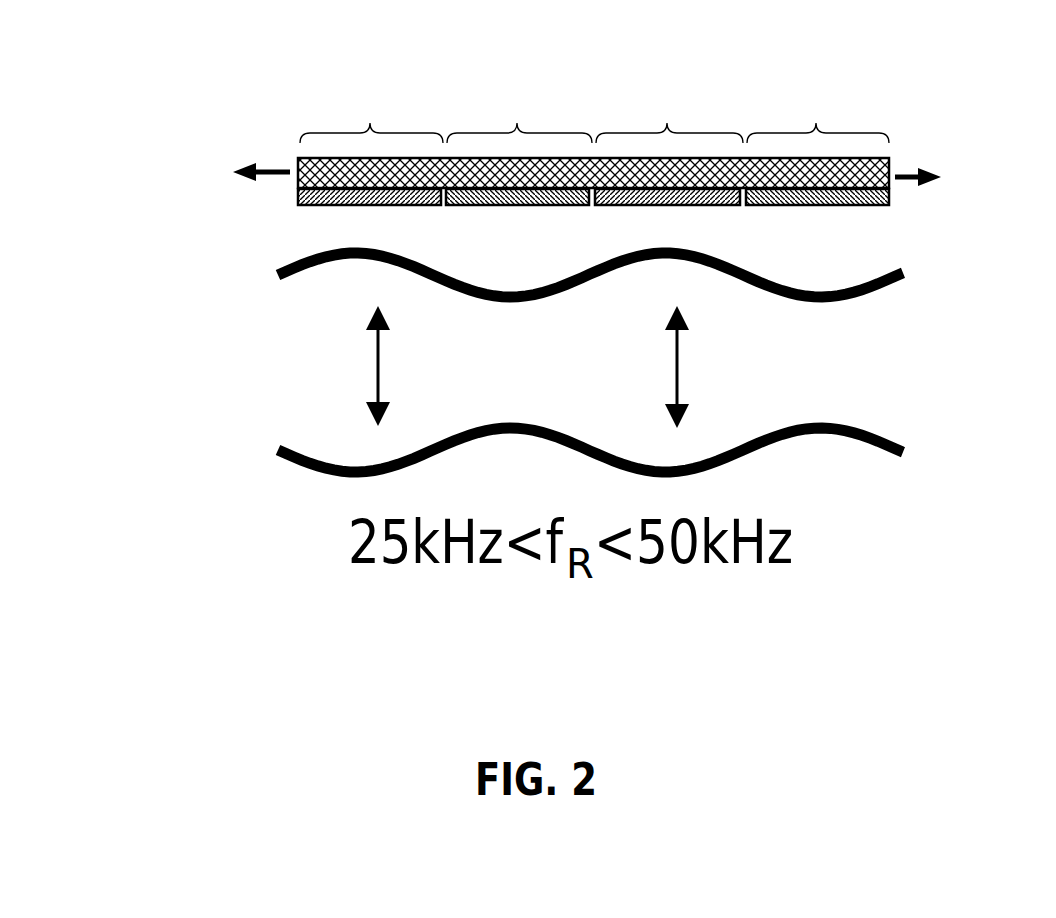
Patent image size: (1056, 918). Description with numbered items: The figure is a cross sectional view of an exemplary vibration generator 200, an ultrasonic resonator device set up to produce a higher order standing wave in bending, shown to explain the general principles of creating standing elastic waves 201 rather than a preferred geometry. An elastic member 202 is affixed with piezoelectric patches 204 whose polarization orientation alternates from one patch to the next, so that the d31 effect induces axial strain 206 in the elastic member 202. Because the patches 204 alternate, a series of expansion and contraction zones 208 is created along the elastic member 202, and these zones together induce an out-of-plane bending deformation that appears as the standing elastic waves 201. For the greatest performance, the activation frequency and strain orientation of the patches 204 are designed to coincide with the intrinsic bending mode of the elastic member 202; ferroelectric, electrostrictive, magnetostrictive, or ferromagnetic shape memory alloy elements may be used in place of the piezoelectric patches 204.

The vibration generator 200 is at (182, 70).
The standing elastic waves 201 is at (892, 283).
The elastic member 202 is at (297, 177).
The piezoelectric patches 204 is at (297, 205).
The axial strain 206 is at (264, 168).
The expansion and contraction zones 208 is at (370, 123).